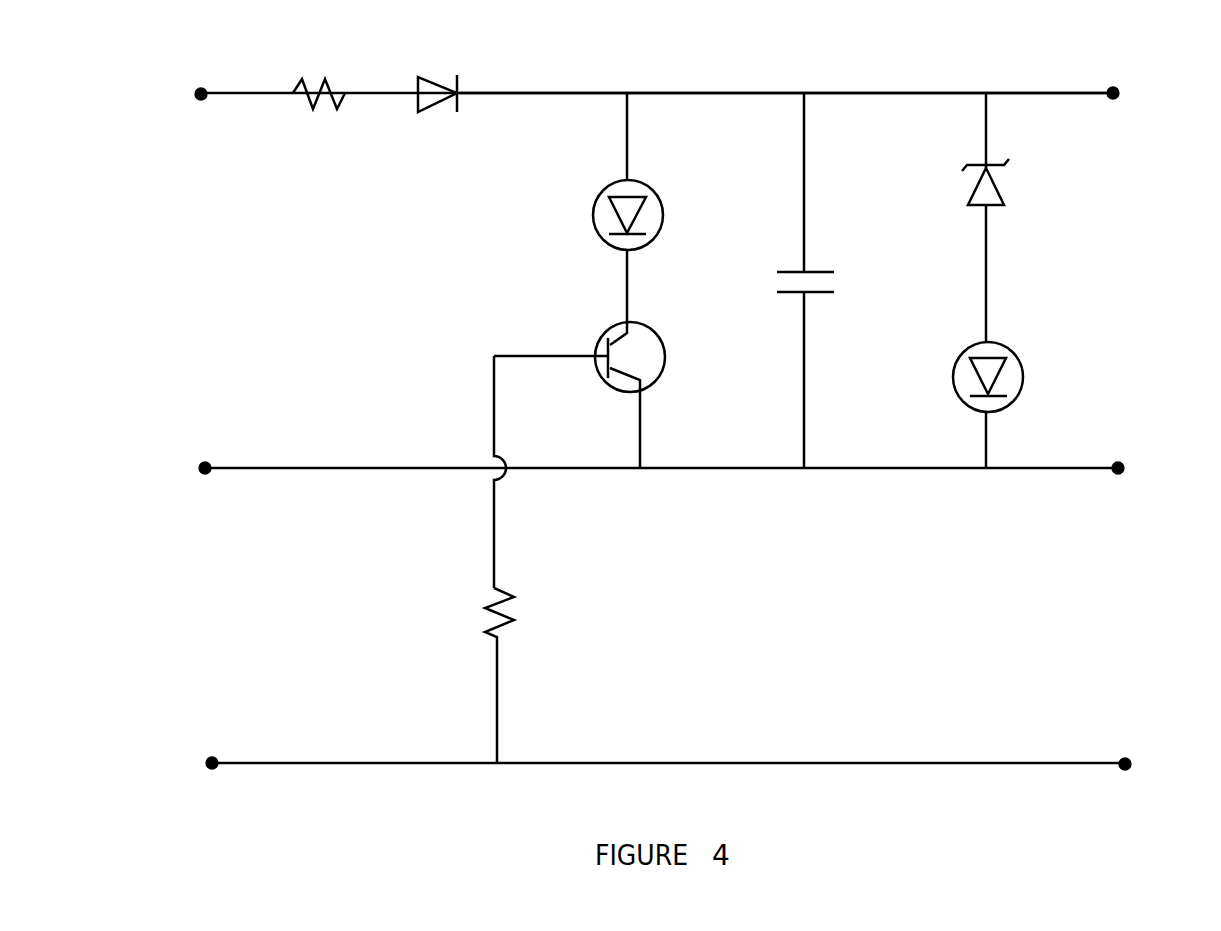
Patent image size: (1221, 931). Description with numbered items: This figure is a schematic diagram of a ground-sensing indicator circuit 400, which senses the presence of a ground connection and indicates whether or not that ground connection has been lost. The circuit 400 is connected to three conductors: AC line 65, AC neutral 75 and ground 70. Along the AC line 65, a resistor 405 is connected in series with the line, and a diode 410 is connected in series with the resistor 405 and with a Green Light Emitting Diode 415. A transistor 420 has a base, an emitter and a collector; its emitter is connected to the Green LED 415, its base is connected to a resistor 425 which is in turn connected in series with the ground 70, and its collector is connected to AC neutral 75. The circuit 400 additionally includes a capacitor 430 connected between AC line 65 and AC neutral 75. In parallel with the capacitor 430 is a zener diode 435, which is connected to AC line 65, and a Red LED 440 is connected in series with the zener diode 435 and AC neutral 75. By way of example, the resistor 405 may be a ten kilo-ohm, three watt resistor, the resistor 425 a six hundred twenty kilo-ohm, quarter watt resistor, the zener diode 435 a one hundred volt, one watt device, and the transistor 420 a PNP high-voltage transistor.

The AC line 65 is at (204, 86).
The ground 70 is at (212, 755).
The AC neutral 75 is at (208, 455).
The ground-sensing indicator circuit 400 is at (716, 90).
The resistor 405 is at (312, 76).
The diode 410 is at (437, 93).
The Green Light Emitting Diode (LED) 415 is at (641, 181).
The transistor 420 is at (645, 322).
The resistor 425 is at (522, 588).
The capacitor 430 is at (823, 268).
The zener diode 435 is at (985, 217).
The Red LED 440 is at (1012, 345).